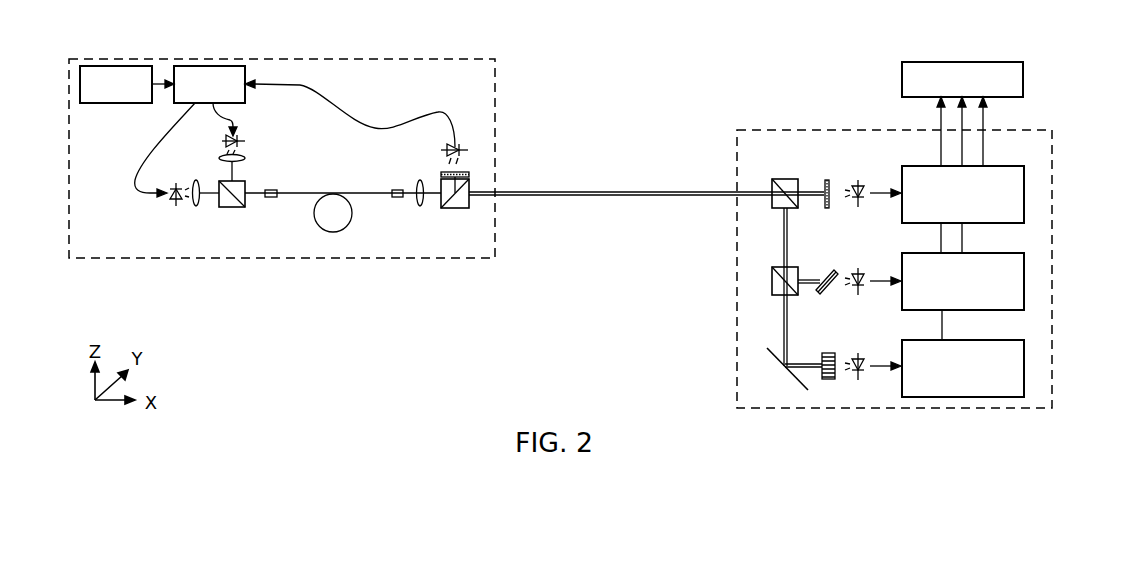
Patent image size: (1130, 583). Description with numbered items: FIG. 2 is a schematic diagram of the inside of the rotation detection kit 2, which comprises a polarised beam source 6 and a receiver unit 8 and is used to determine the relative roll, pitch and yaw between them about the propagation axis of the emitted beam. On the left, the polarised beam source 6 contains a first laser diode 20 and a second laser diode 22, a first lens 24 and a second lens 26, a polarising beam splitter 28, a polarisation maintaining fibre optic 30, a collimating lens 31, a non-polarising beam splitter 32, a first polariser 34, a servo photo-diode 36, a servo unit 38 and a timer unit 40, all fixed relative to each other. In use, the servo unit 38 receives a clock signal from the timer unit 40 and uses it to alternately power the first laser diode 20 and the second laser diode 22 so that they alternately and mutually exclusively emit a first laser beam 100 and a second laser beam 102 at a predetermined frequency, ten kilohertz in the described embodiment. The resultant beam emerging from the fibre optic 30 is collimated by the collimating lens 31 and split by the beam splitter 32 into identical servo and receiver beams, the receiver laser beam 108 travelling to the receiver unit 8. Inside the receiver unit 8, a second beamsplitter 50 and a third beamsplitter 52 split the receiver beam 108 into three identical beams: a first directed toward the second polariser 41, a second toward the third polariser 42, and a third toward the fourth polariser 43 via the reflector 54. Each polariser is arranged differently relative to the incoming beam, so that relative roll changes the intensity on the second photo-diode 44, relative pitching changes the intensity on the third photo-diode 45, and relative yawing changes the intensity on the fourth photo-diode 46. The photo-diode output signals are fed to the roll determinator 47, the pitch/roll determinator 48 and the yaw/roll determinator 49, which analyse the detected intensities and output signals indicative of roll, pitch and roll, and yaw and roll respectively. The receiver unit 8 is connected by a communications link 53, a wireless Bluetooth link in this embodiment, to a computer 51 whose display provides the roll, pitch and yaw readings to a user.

The rotation detection kit 2 is at (518, 68).
The polarised beam source 6 is at (262, 59).
The receiver unit 8 is at (757, 130).
The first laser diode 20 is at (172, 203).
The second laser diode 22 is at (238, 138).
The first lens 24 is at (196, 207).
The second lens 26 is at (246, 157).
The polarising beam splitter 28 is at (232, 208).
The polarisation maintaining fibre optic 30 is at (333, 232).
The collimating lens 31 is at (420, 207).
The non-polarising beam splitter 32 is at (468, 189).
The first polariser 34 is at (470, 175).
The servo photo-diode 36 is at (460, 148).
The servo unit 38 is at (208, 65).
The timer unit 40 is at (118, 65).
The second polariser 41 is at (827, 178).
The third polariser 42 is at (818, 292).
The fourth polariser 43 is at (828, 380).
The second photo-diode 44 is at (857, 178).
The third photo-diode 45 is at (862, 297).
The fourth photo-diode 46 is at (862, 381).
The roll determinator unit 47 is at (1027, 195).
The pitch/roll determinator unit 48 is at (1027, 281).
The yaw/roll determinator unit 49 is at (1027, 378).
The second beamsplitter 50 is at (772, 188).
The computer 51 is at (1025, 85).
The third beamsplitter 52 is at (772, 283).
The communications link 53 is at (1002, 117).
The reflector 54 is at (770, 355).
The first laser beam 100 is at (205, 195).
The second laser beam 102 is at (236, 172).
The receiver laser beam 108 is at (622, 190).